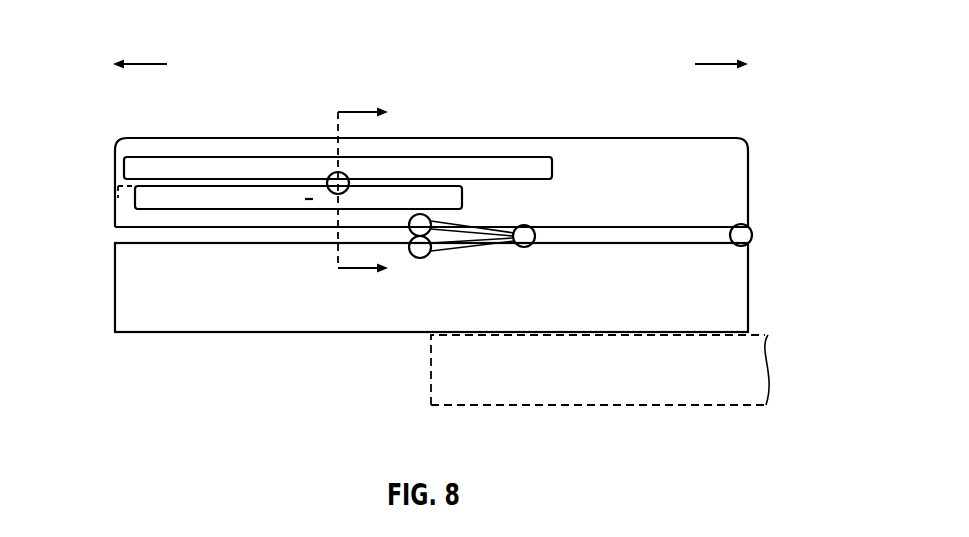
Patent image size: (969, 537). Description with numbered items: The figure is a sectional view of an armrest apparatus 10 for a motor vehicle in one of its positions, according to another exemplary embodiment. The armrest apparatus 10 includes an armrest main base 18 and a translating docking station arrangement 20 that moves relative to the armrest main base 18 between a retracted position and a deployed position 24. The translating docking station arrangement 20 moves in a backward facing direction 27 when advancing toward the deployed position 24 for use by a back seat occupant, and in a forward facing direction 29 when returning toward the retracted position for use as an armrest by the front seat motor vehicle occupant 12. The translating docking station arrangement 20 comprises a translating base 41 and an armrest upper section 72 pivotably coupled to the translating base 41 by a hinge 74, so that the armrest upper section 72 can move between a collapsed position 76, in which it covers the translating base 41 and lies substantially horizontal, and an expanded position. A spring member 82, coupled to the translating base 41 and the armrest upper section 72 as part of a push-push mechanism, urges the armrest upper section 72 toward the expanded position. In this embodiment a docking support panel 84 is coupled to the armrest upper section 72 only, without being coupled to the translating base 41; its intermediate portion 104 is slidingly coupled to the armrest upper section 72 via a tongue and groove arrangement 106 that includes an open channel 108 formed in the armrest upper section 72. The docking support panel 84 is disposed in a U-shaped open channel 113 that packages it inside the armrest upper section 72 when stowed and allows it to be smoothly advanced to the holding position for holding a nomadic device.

The armrest apparatus 10 is at (768, 86).
The front seat motor vehicle occupant 12 is at (379, 193).
The armrest main base 18 is at (535, 383).
The translating docking station arrangement 20 is at (810, 181).
The deployed position 24 is at (810, 148).
The backward facing direction 27 is at (152, 62).
The forward facing direction 29 is at (722, 62).
The translating base 41 is at (168, 320).
The armrest upper section 72 is at (452, 137).
The hinge 74 is at (752, 233).
The collapsed position 76 is at (787, 116).
The spring member 82 is at (450, 256).
The docking support panel 84 is at (135, 196).
The intermediate portion 104 is at (313, 199).
The tongue and groove arrangement 106 is at (328, 166).
The open channel 108 is at (510, 160).
The U-shaped open channel 113 is at (118, 192).